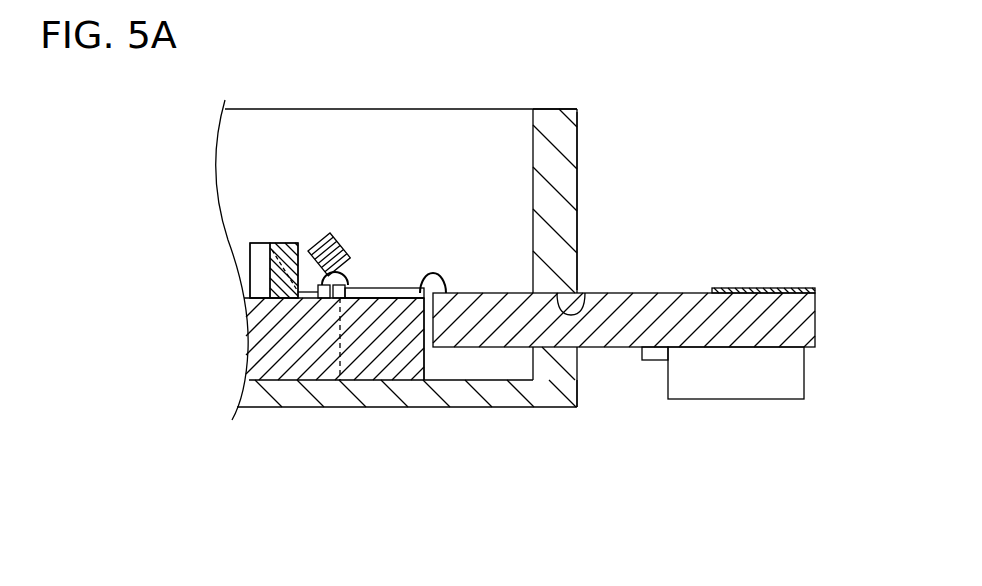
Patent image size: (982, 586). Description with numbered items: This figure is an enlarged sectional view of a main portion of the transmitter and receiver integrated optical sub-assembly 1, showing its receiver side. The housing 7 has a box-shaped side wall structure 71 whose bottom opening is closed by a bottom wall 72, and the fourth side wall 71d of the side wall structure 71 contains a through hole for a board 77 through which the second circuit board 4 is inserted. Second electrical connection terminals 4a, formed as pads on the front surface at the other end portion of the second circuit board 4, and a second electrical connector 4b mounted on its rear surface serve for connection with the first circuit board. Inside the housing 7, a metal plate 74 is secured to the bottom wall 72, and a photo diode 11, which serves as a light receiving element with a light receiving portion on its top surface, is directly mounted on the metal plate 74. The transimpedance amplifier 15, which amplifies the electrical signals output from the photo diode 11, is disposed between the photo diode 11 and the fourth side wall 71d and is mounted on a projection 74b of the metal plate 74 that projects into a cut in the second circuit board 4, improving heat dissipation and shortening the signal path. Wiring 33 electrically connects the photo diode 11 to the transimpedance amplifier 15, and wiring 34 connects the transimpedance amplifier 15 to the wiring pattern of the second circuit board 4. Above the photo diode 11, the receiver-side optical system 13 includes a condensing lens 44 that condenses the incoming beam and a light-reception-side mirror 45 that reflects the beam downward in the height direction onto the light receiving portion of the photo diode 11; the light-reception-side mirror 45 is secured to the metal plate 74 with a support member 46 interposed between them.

The transmitter and receiver integrated optical sub-assembly 1 is at (265, 70).
The housing 7 is at (597, 426).
The side wall structure 71 is at (552, 118).
The fourth side wall 71d is at (578, 130).
The bottom wall 72 is at (502, 392).
The metal plate 74 is at (295, 358).
The projection 74b is at (388, 358).
The receiver-side optical system 13 is at (276, 205).
The condensing lens 44 is at (275, 258).
The light-reception-side mirror 45 is at (336, 243).
The support member 46 is at (250, 259).
The photo diode 11 is at (300, 292).
The wiring 33 is at (340, 282).
The transimpedance amplifier 15 is at (400, 290).
The wiring 34 is at (434, 278).
The through hole for a board 77 is at (585, 293).
The second circuit board 4 is at (665, 305).
The second electrical connection terminals 4a is at (782, 290).
The second electrical connector 4b is at (757, 380).